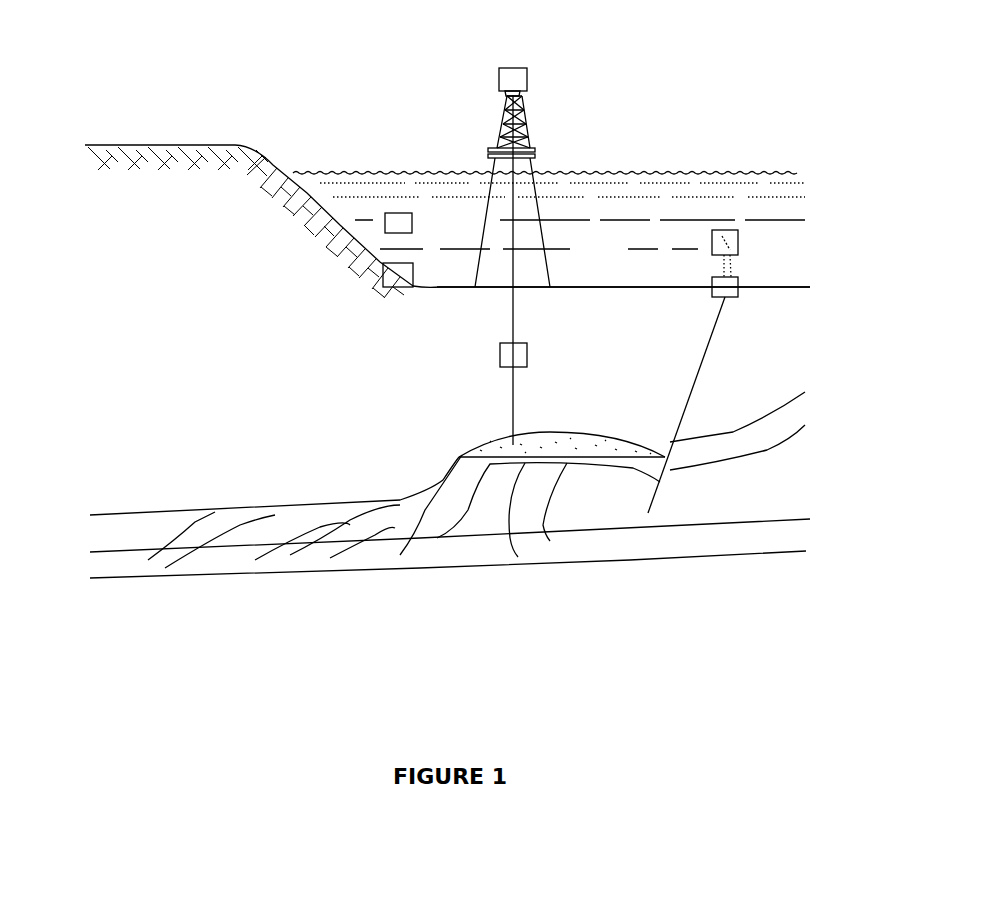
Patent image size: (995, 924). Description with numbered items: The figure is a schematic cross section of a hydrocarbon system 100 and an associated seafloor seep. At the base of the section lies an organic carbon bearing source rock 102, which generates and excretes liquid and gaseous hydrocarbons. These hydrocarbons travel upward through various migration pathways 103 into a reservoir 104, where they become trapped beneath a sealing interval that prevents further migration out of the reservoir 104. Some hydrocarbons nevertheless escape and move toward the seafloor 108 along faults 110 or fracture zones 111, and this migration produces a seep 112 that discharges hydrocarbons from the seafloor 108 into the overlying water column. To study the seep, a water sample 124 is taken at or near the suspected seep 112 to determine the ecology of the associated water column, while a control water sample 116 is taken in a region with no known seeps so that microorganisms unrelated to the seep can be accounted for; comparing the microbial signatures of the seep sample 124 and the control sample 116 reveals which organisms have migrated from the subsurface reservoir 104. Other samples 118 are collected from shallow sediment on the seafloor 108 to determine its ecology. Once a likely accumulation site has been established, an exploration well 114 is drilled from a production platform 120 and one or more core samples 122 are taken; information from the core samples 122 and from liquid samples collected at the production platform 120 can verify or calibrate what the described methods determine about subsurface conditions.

The hydrocarbon system 100 is at (218, 46).
The organic carbon bearing source rock 102 is at (590, 553).
The migration pathways 103 is at (178, 534).
The reservoir 104 is at (490, 445).
The seafloor 108 is at (613, 287).
The faults 110 is at (702, 348).
The fracture zones 111 is at (747, 428).
The seep 112 is at (720, 270).
The exploration well 114 is at (522, 108).
The control water sample 116 is at (413, 222).
The shallow sediment samples 118 is at (381, 273).
The production platform 120 is at (528, 78).
The core samples 122 is at (498, 352).
The water sample at seep 124 is at (739, 240).